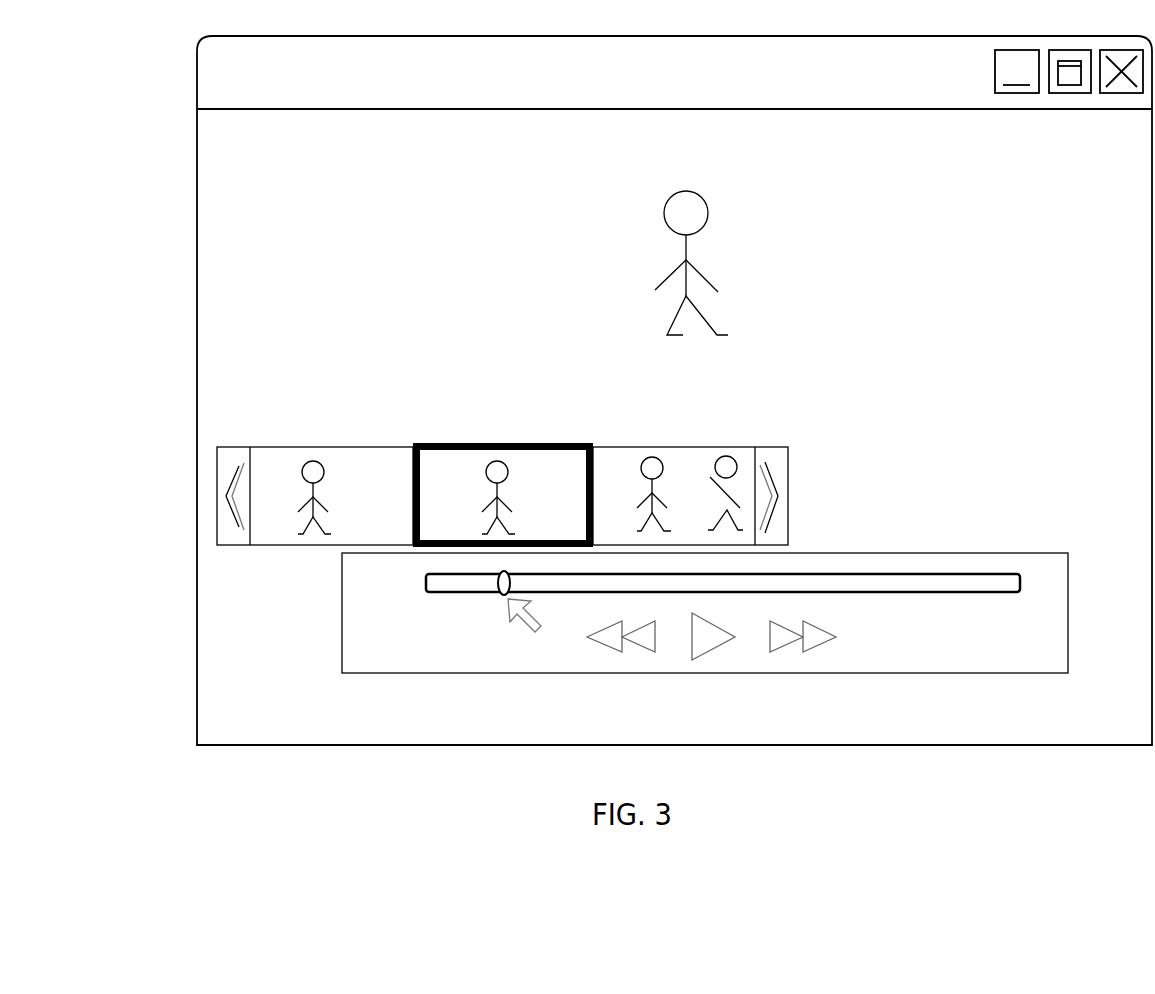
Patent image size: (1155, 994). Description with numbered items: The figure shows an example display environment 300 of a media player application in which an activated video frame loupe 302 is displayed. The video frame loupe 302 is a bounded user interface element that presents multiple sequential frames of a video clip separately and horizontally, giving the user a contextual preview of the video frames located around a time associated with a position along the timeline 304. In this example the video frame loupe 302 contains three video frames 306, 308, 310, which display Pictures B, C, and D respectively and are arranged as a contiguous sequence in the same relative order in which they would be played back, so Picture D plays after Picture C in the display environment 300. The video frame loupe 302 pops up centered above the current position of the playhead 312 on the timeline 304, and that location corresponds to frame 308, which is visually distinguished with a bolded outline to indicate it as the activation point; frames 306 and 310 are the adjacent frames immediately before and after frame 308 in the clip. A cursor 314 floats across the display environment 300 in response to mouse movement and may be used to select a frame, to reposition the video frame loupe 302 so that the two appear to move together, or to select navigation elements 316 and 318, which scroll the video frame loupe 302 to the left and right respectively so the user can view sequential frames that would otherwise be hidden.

The display environment 300 is at (158, 137).
The video frame loupe 302 is at (503, 386).
The timeline 304 is at (1038, 583).
The frame 306 is at (276, 463).
The frame 308 is at (446, 462).
The frame 310 is at (620, 465).
The playhead 312 is at (494, 614).
The cursor 314 is at (513, 634).
The navigation element 316 is at (232, 455).
The navigation element 318 is at (772, 455).